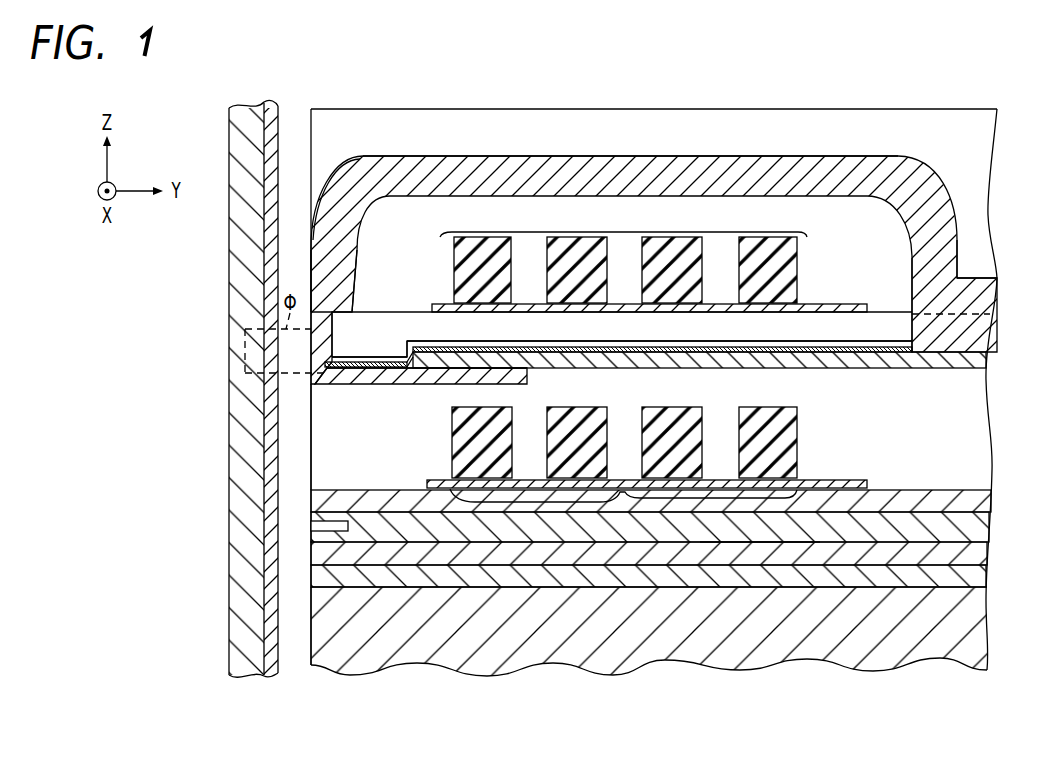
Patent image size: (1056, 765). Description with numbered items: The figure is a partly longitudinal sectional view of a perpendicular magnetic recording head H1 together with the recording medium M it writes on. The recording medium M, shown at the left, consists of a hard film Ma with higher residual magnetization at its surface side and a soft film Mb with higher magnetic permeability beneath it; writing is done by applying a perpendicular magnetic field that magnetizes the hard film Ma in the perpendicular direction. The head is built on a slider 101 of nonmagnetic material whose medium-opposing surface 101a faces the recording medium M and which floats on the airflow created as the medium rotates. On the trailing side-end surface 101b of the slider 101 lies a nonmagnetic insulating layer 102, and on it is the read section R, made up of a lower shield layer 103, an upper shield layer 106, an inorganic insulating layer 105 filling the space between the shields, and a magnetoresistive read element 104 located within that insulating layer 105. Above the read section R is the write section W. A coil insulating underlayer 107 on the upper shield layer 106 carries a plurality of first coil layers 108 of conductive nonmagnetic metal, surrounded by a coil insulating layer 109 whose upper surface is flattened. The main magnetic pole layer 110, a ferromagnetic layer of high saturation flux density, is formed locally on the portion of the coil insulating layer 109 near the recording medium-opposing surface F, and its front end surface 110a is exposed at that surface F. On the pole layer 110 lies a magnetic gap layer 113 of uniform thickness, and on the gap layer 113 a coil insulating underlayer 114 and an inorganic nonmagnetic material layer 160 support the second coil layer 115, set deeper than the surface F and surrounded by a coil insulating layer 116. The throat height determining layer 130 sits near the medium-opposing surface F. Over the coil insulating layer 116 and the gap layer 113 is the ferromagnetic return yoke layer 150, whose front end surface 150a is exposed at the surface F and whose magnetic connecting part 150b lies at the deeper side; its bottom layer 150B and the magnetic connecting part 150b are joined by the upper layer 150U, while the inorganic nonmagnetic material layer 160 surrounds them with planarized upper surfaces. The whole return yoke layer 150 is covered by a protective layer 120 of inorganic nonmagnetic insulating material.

The slider 101 is at (649, 668).
The medium-opposing surface 101a is at (315, 668).
The trailing side-end surface 101b is at (649, 662).
The nonmagnetic insulating layer 102 is at (571, 602).
The lower shield layer 103 is at (572, 572).
The read element 104 is at (573, 535).
The inorganic insulating layer 105 is at (760, 640).
The upper shield layer 106 is at (574, 510).
The coil insulating underlayer 107 is at (647, 615).
The first coil layers 108 is at (623, 578).
The coil insulating layer 109 is at (239, 437).
The main magnetic pole layer 110 is at (571, 392).
The front end surface 110a is at (337, 388).
The magnetic gap layer 113 is at (534, 348).
The coil insulating underlayer 114 is at (611, 208).
The second coil layer 115 is at (649, 186).
The coil insulating layer 116 is at (625, 181).
The protective layer 120 is at (654, 222).
The throat height determining layer 130 is at (368, 212).
The return yoke layer 150 is at (654, 222).
The upper layer 150U is at (630, 111).
The front end surface 150a is at (230, 276).
The magnetic connecting part 150b is at (970, 169).
The bottom layer 150B is at (529, 330).
The inorganic nonmagnetic material layer 160 is at (889, 206).
The recording medium M is at (220, 410).
The hard film Ma is at (218, 405).
The soft film Mb is at (211, 394).
The perpendicular magnetic recording head H1 is at (253, 74).
The recording medium-opposing surface F is at (254, 145).
The write section W is at (1028, 339).
The read section R is at (1025, 528).